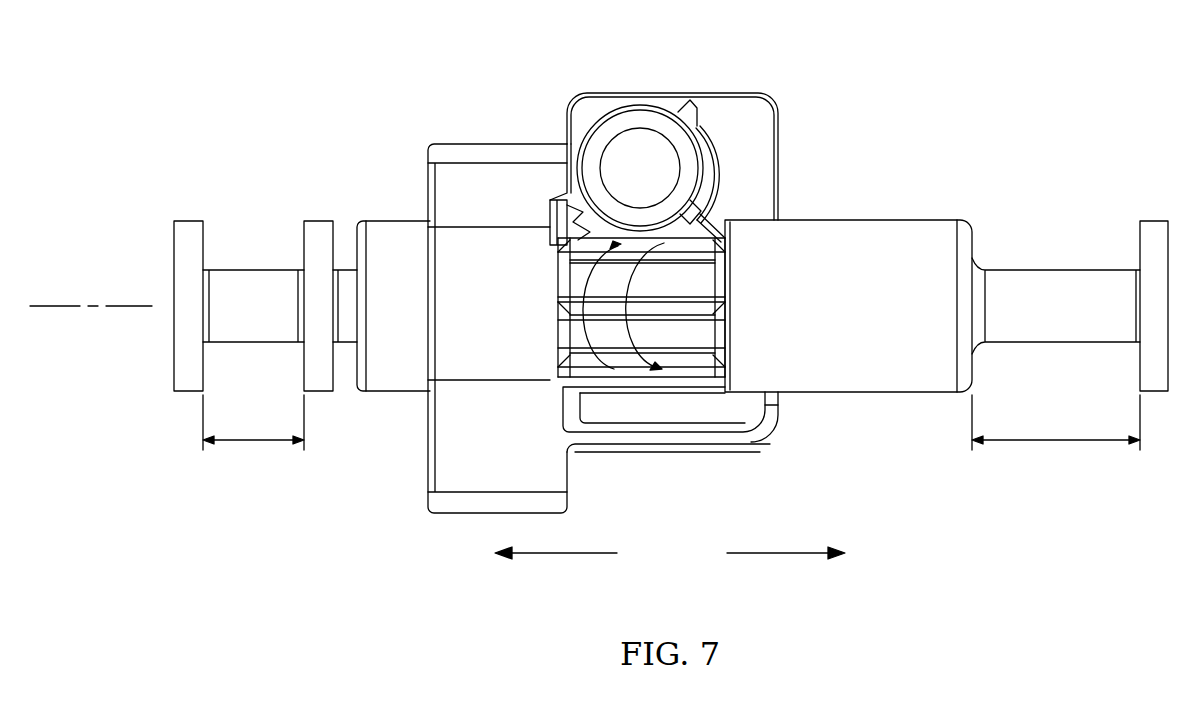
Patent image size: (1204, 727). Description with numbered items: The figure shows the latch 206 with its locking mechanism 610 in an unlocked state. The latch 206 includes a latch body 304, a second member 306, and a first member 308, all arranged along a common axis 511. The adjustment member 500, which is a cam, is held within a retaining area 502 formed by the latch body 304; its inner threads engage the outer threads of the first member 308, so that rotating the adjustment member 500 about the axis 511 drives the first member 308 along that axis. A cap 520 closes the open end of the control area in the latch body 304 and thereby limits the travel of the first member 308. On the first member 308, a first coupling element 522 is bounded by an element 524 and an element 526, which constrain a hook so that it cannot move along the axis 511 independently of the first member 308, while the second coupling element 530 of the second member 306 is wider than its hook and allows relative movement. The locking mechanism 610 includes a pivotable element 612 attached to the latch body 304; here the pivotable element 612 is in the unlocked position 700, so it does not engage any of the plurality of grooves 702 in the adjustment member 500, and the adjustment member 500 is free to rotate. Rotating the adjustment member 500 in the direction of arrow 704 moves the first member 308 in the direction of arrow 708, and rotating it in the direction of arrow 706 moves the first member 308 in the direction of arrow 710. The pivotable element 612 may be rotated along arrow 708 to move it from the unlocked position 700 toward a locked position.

The latch 206 is at (876, 106).
The latch body 304 is at (650, 444).
The second member 306 is at (1062, 270).
The first member 308 is at (252, 270).
The adjustment member 500 is at (706, 333).
The retaining area 502 is at (712, 393).
The axis 511 is at (92, 303).
The cap 520 is at (397, 221).
The first coupling element 522 is at (253, 422).
The element 524 is at (183, 221).
The element 526 is at (313, 221).
The second coupling element 530 is at (1056, 422).
The locking mechanism 610 is at (645, 151).
The pivotable element 612 is at (627, 137).
The unlocked position 700 is at (703, 164).
The plurality of grooves 702 is at (556, 262).
The arrow 704 is at (609, 370).
The arrow 706 is at (656, 371).
The arrow 708 is at (563, 556).
The arrow 710 is at (775, 556).